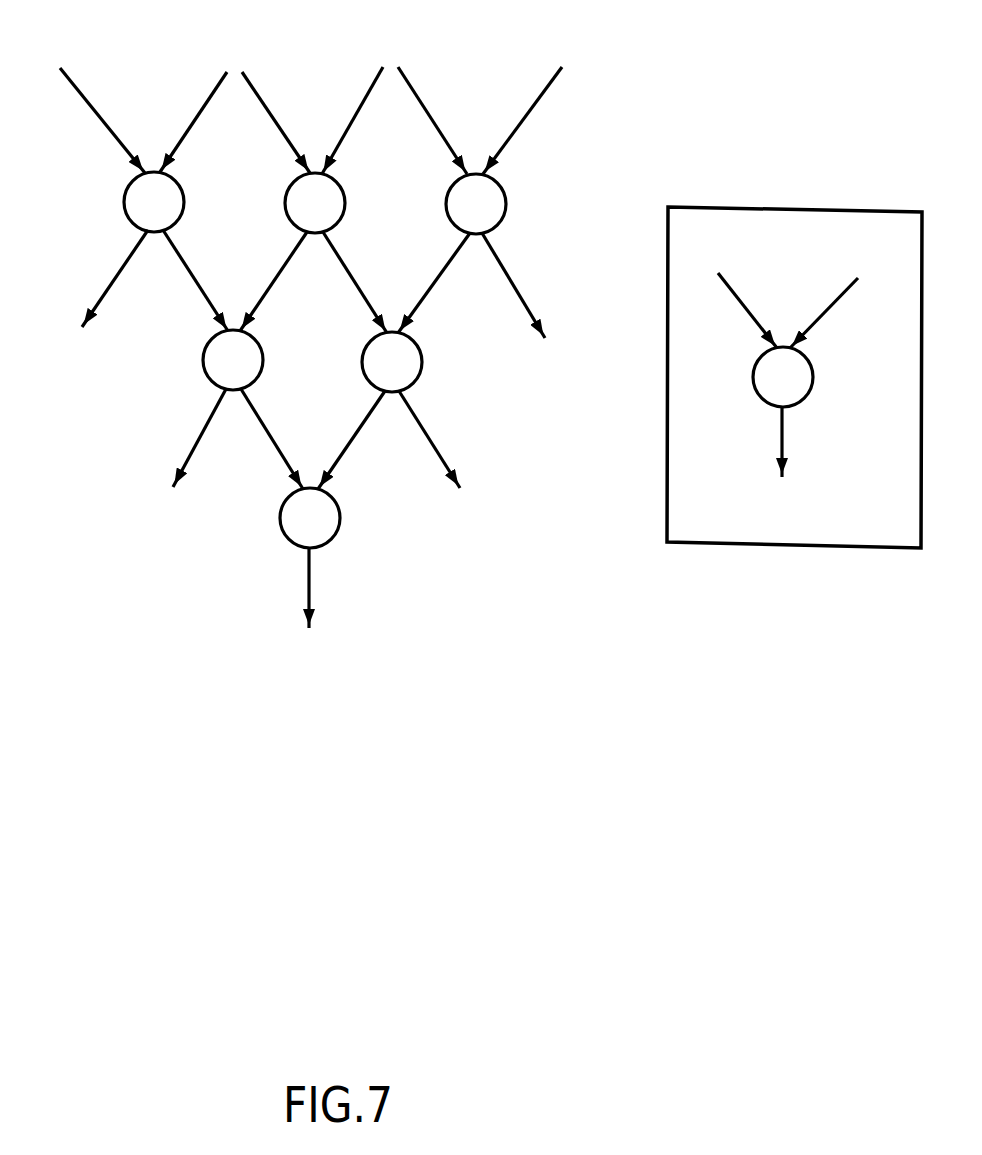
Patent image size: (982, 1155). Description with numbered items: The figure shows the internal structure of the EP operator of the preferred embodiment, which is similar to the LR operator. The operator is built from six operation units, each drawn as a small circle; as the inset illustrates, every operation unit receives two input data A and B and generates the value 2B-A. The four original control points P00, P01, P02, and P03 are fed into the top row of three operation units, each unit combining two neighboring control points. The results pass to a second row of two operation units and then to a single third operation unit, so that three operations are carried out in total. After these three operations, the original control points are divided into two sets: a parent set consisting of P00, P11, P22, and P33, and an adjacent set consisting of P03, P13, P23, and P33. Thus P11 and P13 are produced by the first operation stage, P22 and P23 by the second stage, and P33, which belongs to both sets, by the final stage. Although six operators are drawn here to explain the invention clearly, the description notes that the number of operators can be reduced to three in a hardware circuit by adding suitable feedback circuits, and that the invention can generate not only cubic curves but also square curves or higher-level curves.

The original control point P00 is at (96, 94).
The original control point P01 is at (235, 94).
The original control point P02 is at (394, 94).
The original control point P03 is at (542, 94).
The parent set control point P11 is at (112, 306).
The adjacent set control point P13 is at (527, 314).
The parent set control point P22 is at (196, 470).
The adjacent set control point P23 is at (448, 471).
The shared control point P33 is at (321, 621).
The first input data A is at (739, 285).
The second input data B is at (833, 285).
The operation unit output 2B-A is at (783, 463).